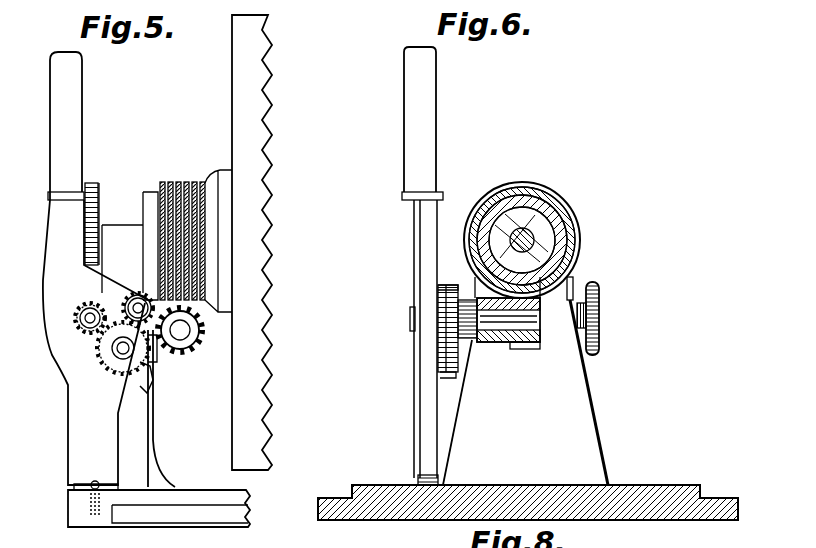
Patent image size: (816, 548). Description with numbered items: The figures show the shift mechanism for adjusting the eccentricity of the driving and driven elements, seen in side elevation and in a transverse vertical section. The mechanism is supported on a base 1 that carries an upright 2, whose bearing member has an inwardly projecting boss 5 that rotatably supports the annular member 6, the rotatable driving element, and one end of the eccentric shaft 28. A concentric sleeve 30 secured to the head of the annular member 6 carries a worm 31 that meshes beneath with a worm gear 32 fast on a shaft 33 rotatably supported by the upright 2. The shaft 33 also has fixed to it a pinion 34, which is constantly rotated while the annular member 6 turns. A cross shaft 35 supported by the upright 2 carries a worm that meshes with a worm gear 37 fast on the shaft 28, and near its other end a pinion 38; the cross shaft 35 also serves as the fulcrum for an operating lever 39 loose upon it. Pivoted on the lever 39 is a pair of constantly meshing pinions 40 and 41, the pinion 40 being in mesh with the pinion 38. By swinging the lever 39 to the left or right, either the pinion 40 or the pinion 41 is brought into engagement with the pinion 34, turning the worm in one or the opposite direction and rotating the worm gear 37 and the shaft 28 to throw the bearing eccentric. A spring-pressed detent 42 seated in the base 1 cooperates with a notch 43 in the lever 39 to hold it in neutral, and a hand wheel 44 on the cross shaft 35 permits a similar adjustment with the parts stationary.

In FIG. 5, the base 1 is at (73, 508).
In FIG. 6, the base 1 is at (645, 492).
In FIG. 5, the upright 2 is at (143, 467).
In FIG. 6, the upright 2 is at (585, 408).
In FIG. 5, the boss 5 is at (130, 246).
In FIG. 6, the boss 5 is at (547, 228).
In FIG. 5, the annular member 6 is at (232, 76).
In FIG. 6, the shaft 28 is at (525, 250).
In FIG. 5, the sleeve 30 is at (220, 178).
In FIG. 6, the sleeve 30 is at (540, 207).
In FIG. 5, the worm 31 is at (178, 183).
In FIG. 6, the worm 31 is at (519, 186).
In FIG. 6, the worm gear 32 is at (532, 344).
In FIG. 5, the shaft 33 is at (184, 330).
In FIG. 6, the shaft 33 is at (501, 330).
In FIG. 5, the pinion 34 is at (176, 350).
In FIG. 5, the cross shaft 35 is at (90, 320).
In FIG. 5, the worm gear 37 is at (96, 185).
In FIG. 5, the pinion 38 is at (78, 305).
In FIG. 6, the pinion 38 is at (444, 304).
In FIG. 5, the operating lever 39 is at (62, 237).
In FIG. 6, the operating lever 39 is at (418, 218).
In FIG. 5, the pinion 40 is at (145, 375).
In FIG. 6, the pinion 40 is at (452, 372).
In FIG. 5, the pinion 41 is at (145, 292).
In FIG. 6, the pinion 41 is at (447, 285).
In FIG. 5, the spring-pressed detent 42 is at (74, 486).
In FIG. 6, the spring-pressed detent 42 is at (420, 483).
In FIG. 5, the notch 43 is at (95, 481).
In FIG. 6, the hand wheel 44 is at (600, 297).